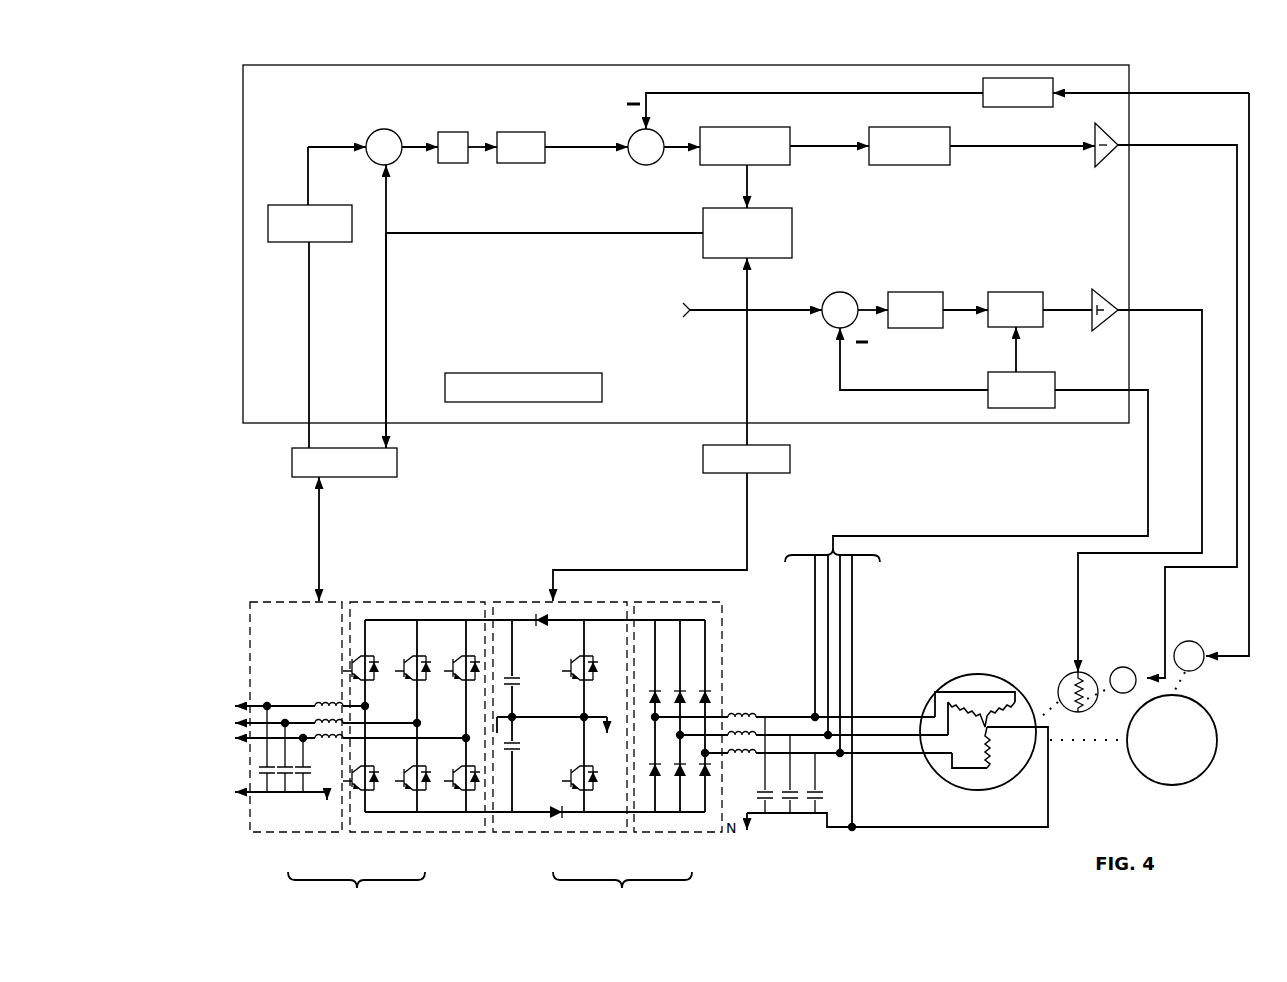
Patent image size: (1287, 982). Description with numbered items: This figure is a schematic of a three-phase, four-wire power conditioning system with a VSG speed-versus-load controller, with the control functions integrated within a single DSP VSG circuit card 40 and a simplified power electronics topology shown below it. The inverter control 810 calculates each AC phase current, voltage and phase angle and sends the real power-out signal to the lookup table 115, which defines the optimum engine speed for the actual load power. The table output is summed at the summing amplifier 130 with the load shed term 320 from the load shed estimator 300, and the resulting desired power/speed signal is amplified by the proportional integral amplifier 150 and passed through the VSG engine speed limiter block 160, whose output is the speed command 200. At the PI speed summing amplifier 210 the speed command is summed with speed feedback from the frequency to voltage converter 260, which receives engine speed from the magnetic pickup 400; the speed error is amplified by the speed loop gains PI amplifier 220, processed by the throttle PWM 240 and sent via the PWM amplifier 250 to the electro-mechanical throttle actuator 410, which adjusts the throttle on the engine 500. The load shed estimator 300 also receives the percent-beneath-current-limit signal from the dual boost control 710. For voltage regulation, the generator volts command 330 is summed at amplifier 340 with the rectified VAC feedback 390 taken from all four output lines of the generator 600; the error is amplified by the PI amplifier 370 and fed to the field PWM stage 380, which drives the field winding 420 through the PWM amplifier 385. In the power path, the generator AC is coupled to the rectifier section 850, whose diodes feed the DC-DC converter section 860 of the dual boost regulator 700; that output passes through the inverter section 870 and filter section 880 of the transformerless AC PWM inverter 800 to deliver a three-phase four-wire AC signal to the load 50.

The VSG circuit card 40 is at (497, 428).
The load 50 is at (214, 682).
The lookup table 115 is at (335, 247).
The summing amplifier 130 is at (394, 131).
The proportional integral amplifier 150 is at (459, 168).
The VSG engine speed limiter block 160 is at (538, 168).
The speed command 200 is at (584, 150).
The PI speed summing amplifier 210 is at (658, 162).
The speed loop gains PI amplifier 220 is at (762, 131).
The throttle pulse width modulator 240 is at (940, 168).
The PWM amplifier 250 is at (1087, 157).
The frequency to voltage converter 260 is at (1030, 108).
The load shed estimator 300 is at (800, 229).
The load shed term 320 is at (388, 287).
The generator volts command 330 is at (705, 301).
The summing amplifier 340 is at (855, 293).
The PI amplifier 370 is at (935, 291).
The field PWM stage 380 is at (1040, 291).
The PWM amplifier 385 is at (1112, 297).
The rectifying feedback amplifiers 390 is at (1062, 376).
The speed feedback magnetic pickup 400 is at (1212, 673).
The electro-mechanical throttle actuator 410 is at (1123, 664).
The field winding 420 is at (1055, 682).
The engine 500 is at (1200, 773).
The generator 600 is at (953, 675).
The enhanced conduction angle dual boost DC bus voltage regulator 700 is at (610, 756).
The ECA dual boost control 710 is at (800, 458).
The transformerless AC PWM inverter 800 is at (470, 756).
The AC PWM control 810 is at (403, 468).
The rectifier section 850 is at (645, 838).
The DC-DC converter section 860 is at (560, 838).
The inverter section 870 is at (390, 838).
The filter section 880 is at (292, 838).